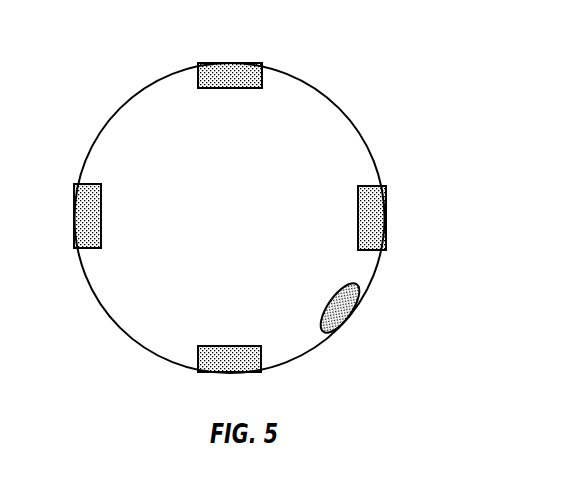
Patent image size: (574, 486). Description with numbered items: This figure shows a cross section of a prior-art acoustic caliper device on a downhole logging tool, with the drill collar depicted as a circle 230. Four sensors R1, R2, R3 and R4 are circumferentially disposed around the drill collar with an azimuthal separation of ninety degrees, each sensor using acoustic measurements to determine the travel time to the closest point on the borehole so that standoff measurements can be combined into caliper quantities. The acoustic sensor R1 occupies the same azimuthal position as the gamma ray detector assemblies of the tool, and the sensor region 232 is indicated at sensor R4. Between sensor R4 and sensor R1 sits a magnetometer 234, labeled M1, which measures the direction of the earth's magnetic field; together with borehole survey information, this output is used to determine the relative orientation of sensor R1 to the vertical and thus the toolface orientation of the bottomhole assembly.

The ring / annular substrate 230 is at (326, 86).
The resistive sensor element R4 232 is at (401, 203).
The magnetometer 234 is at (373, 324).
The acoustic sensor R1 is at (229, 342).
The sensor R2 is at (103, 216).
The sensor R3 is at (230, 89).
The sensor R4 is at (355, 218).
The magnetometer M1 is at (342, 327).